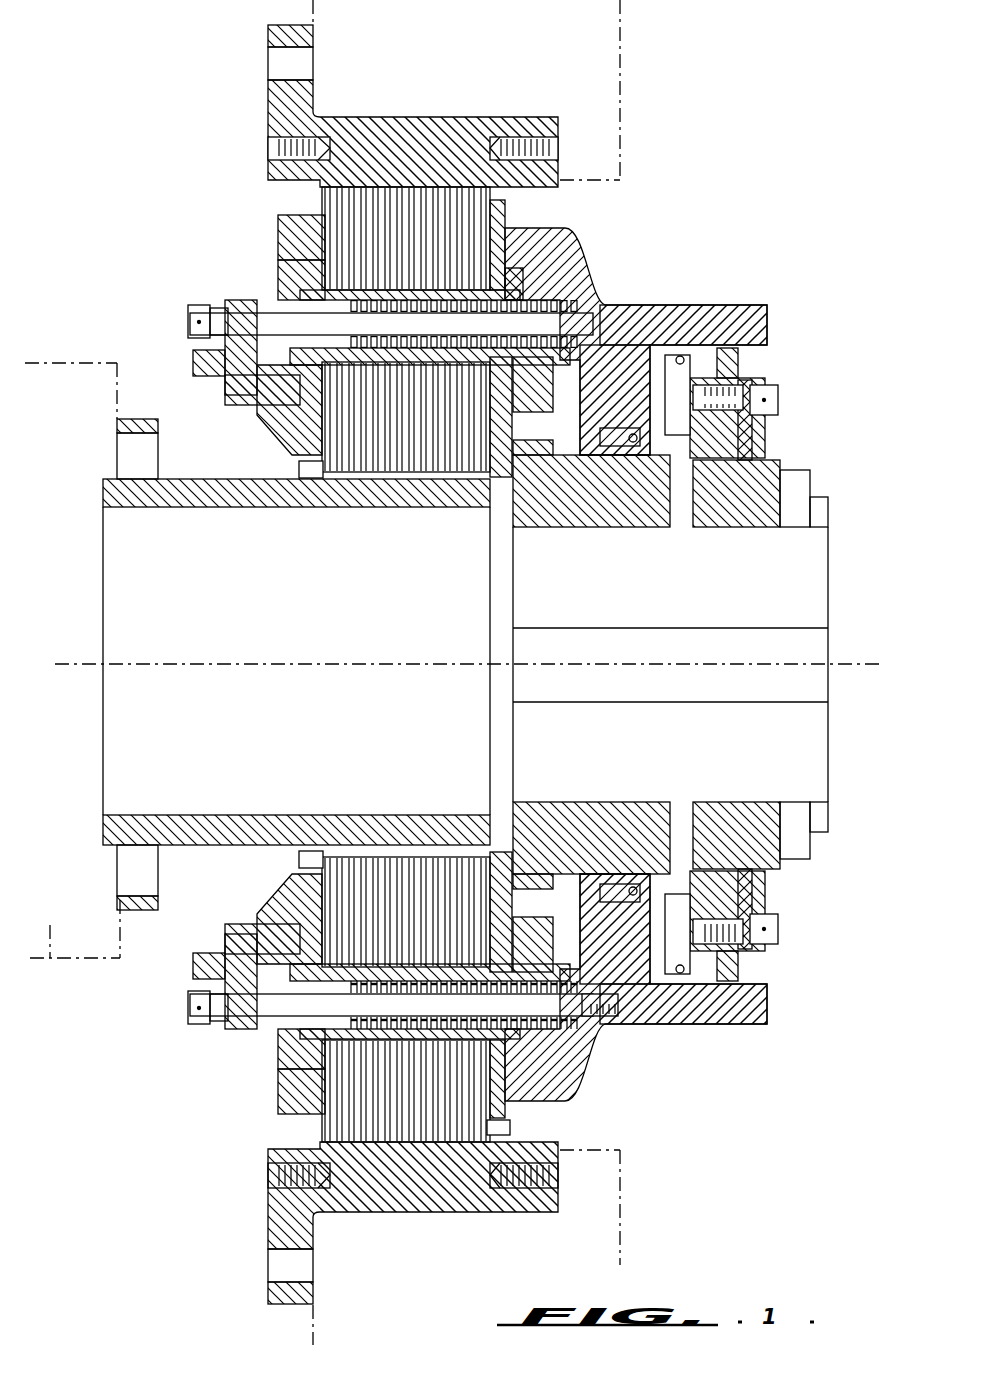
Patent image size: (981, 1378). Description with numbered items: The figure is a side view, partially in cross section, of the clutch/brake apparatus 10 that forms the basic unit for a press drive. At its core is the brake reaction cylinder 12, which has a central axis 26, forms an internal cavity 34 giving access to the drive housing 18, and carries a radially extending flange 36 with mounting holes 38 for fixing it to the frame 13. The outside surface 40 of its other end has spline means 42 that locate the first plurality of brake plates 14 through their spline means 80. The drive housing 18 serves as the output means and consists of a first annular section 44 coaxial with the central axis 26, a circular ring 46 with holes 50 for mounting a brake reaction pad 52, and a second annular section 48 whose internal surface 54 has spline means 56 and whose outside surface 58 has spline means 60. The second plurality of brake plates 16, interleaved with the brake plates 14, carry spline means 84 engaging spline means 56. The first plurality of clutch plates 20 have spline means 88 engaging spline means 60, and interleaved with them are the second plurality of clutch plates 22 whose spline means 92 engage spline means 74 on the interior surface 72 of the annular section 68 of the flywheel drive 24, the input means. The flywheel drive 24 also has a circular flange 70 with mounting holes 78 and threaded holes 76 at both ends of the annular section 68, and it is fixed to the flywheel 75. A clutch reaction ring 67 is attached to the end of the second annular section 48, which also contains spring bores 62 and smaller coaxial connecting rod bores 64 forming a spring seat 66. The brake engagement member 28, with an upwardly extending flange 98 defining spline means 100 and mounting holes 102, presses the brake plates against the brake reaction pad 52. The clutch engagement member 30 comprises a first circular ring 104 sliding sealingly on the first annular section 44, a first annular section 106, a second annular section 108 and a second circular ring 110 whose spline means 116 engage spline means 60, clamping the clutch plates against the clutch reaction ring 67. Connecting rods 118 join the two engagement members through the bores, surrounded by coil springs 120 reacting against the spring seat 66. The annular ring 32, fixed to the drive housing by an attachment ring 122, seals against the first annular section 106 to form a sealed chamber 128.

The clutch/brake apparatus 10 is at (753, 72).
The brake reaction cylinder 12 is at (195, 508).
The frame 13 is at (55, 912).
The first plurality of brake plates 14 is at (440, 472).
The second plurality of brake plates 16 is at (300, 425).
The drive housing 18 is at (540, 522).
The first plurality of clutch plates 20 is at (300, 1106).
The second plurality of clutch plates 22 is at (505, 1110).
The flywheel drive 24 is at (268, 95).
The central axis 26 is at (300, 662).
The brake engagement member 28 is at (195, 356).
The clutch engagement member 30 is at (595, 275).
The annular ring 32 is at (730, 366).
The internal cavity 34 is at (188, 740).
The radially extending flange 36 is at (117, 425).
The mounting holes 38 is at (128, 445).
The outside surface 40 is at (300, 848).
The spline means 42 is at (320, 855).
The first annular section 44 is at (810, 850).
The circular ring 46 is at (545, 395).
The second annular section 48 is at (228, 1006).
The holes 50 is at (538, 893).
The brake reaction pad 52 is at (500, 865).
The internal surface 54 is at (560, 372).
The spline means 56 is at (285, 376).
The outside surface 58 is at (290, 290).
The spline means 60 is at (520, 285).
The spring bores 62 is at (575, 1025).
The connecting rod bores 64 is at (292, 1038).
The spring seat 66 is at (300, 1070).
The clutch reaction ring 67 is at (278, 240).
The annular section 68 is at (558, 1156).
The circular flange 70 is at (268, 1294).
The interior surface 72 is at (268, 1150).
The spline means 74 is at (345, 1150).
The flywheel 75 is at (305, 1330).
The threaded holes 76 is at (275, 1180).
The mounting holes 78 is at (300, 1260).
The spline means 80 is at (322, 472).
The spline means 84 is at (252, 932).
The spline means 88 is at (540, 1060).
The spline means 92 is at (510, 1128).
The upwardly extending flange 98 is at (212, 946).
The spline means 100 is at (300, 905).
The mounting holes 102 is at (198, 306).
The first circular ring 104 is at (592, 458).
The first annular section 106 is at (765, 325).
The second annular section 108 is at (580, 258).
The second circular ring 110 is at (439, 152).
The spline means 116 is at (505, 290).
The connecting rods 118 is at (620, 1008).
The coil springs 120 is at (575, 955).
The attachment ring 122 is at (750, 894).
The sealed chamber 128 is at (683, 893).